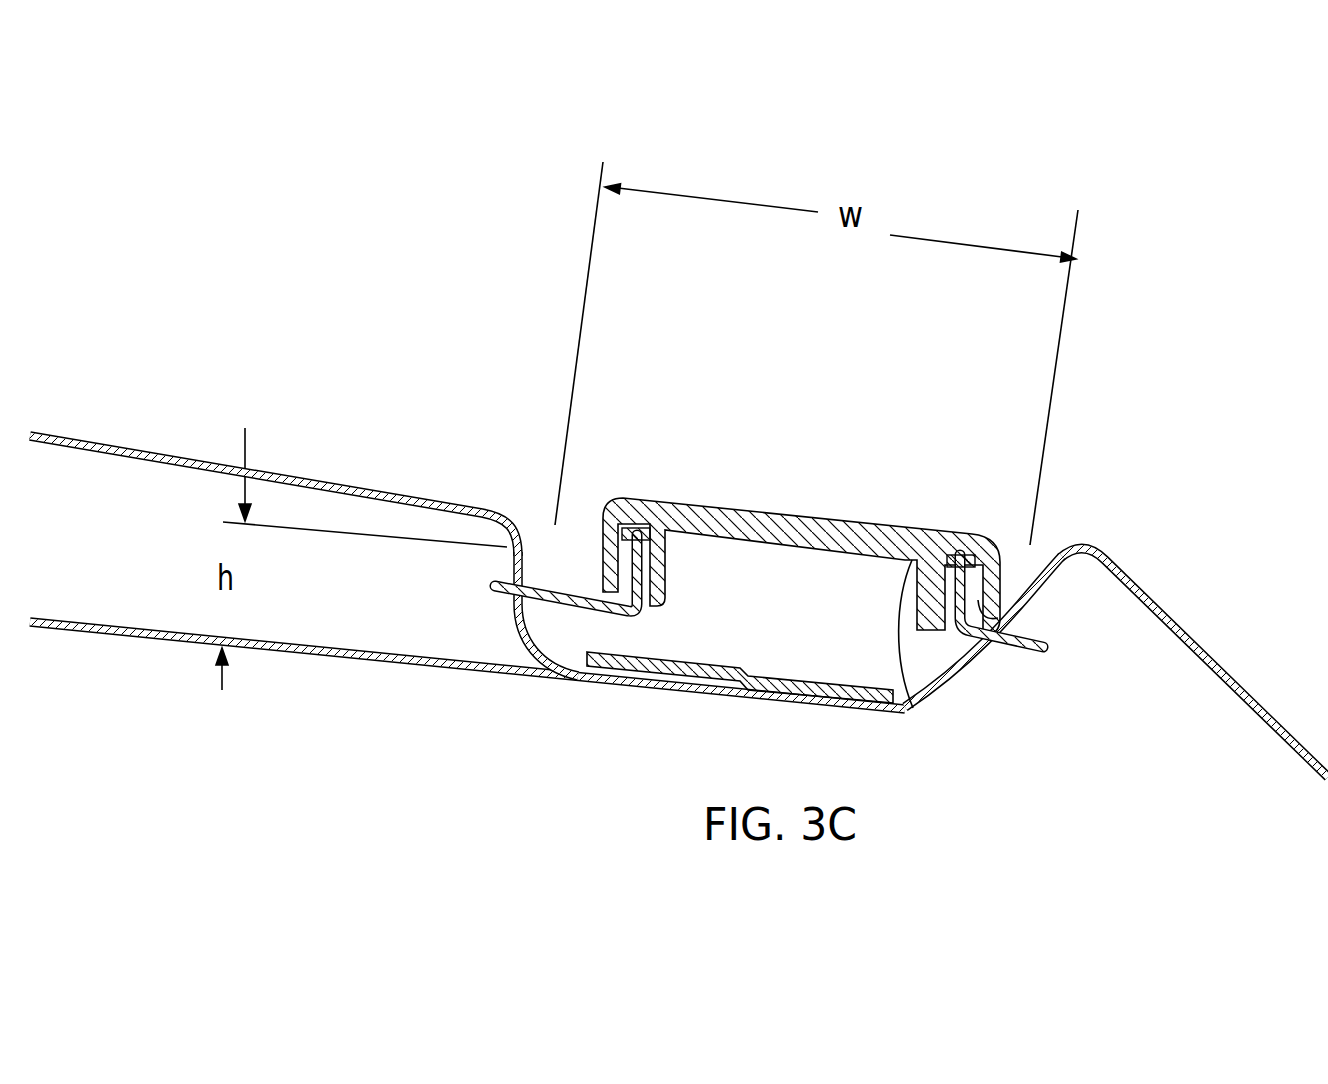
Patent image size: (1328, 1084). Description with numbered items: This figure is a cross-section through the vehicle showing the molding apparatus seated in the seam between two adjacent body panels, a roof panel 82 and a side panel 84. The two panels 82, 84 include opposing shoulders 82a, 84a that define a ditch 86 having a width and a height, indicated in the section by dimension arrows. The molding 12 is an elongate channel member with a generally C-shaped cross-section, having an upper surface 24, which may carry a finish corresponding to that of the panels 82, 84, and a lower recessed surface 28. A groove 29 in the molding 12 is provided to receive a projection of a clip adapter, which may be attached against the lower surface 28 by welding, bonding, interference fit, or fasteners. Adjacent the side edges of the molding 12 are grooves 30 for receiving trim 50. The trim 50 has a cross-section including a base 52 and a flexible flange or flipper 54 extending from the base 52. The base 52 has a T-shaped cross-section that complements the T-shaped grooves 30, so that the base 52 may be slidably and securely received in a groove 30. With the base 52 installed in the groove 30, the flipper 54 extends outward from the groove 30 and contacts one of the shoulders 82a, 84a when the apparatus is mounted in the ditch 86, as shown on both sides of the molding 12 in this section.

The molding 12 is at (818, 412).
The upper surface 24 is at (747, 497).
The lower recessed surface 28 is at (743, 543).
The groove 29 is at (913, 708).
The grooves 30 is at (990, 637).
The trim 50 is at (569, 652).
The base 52 is at (633, 528).
The flexible flange or flipper 54 is at (500, 591).
The roof panel 82 is at (343, 498).
The shoulder 82a is at (510, 520).
The side panel 84 is at (1177, 613).
The shoulder 84a is at (1050, 565).
The ditch 86 is at (793, 663).